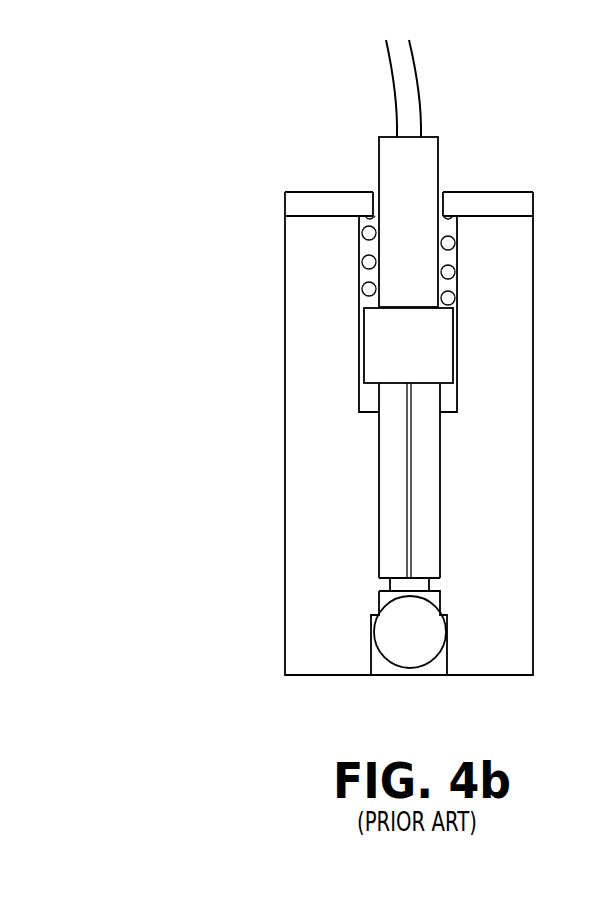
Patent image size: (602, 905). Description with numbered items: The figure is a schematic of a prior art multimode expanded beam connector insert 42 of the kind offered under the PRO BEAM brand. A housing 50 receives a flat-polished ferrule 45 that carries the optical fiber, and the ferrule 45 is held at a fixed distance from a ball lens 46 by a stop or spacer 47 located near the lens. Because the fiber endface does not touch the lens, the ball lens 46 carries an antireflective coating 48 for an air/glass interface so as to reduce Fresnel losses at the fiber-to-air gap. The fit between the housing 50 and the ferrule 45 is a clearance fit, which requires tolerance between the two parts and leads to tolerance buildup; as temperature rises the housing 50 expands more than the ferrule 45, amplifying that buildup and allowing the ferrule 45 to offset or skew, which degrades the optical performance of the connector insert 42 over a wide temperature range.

The multimode expanded beam connector insert 42 is at (415, 382).
The housing 50 is at (296, 376).
The flat-polished ferrule 45 is at (388, 457).
The stop or spacer 47 is at (388, 581).
The ball lens 46 is at (430, 634).
The antireflective coating 48 is at (410, 668).